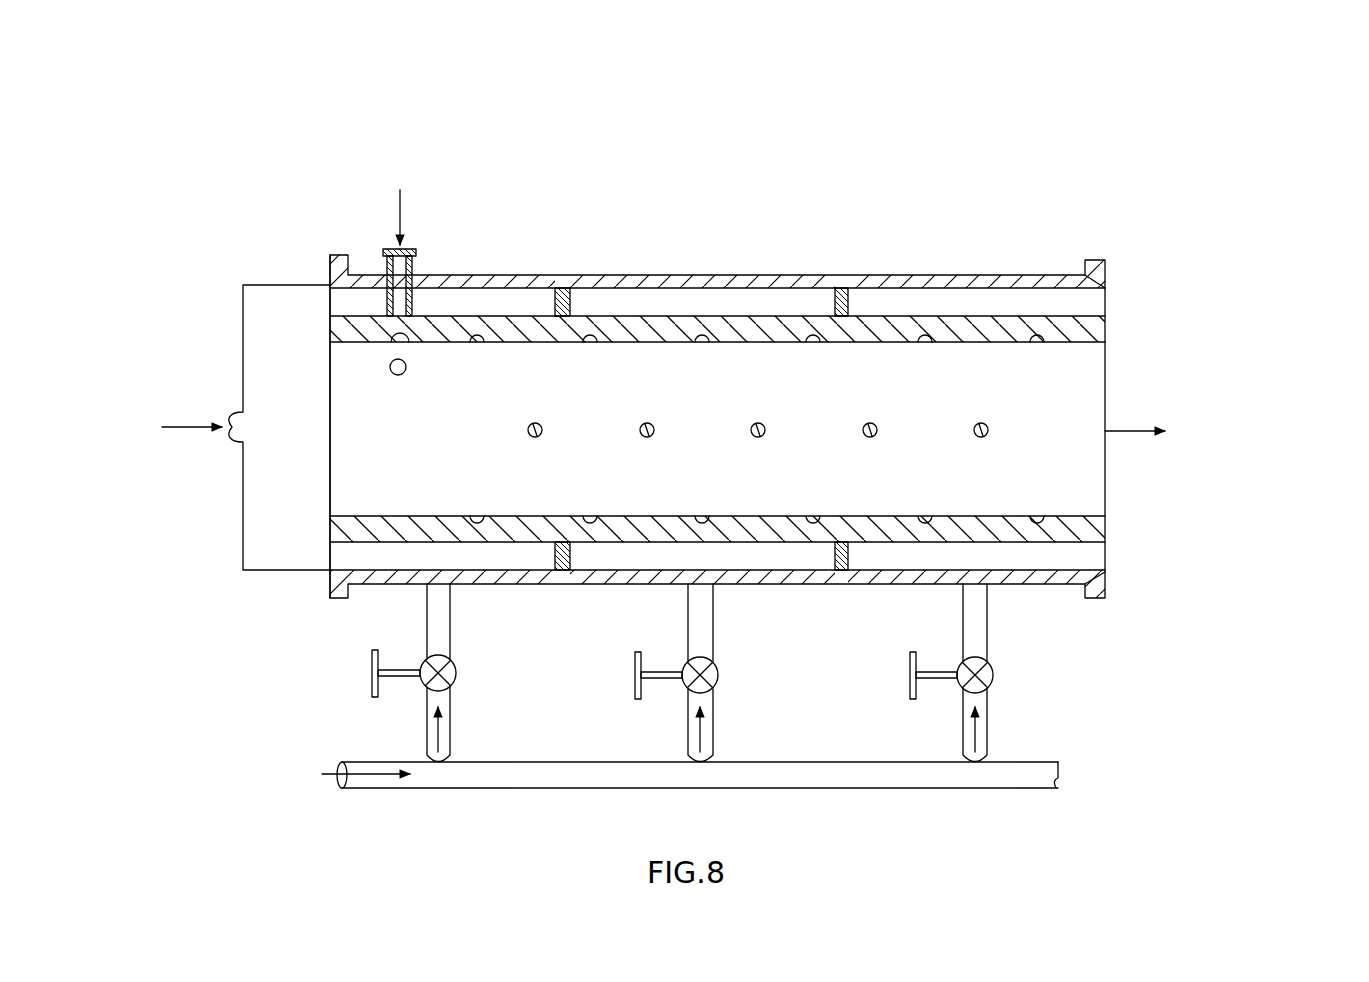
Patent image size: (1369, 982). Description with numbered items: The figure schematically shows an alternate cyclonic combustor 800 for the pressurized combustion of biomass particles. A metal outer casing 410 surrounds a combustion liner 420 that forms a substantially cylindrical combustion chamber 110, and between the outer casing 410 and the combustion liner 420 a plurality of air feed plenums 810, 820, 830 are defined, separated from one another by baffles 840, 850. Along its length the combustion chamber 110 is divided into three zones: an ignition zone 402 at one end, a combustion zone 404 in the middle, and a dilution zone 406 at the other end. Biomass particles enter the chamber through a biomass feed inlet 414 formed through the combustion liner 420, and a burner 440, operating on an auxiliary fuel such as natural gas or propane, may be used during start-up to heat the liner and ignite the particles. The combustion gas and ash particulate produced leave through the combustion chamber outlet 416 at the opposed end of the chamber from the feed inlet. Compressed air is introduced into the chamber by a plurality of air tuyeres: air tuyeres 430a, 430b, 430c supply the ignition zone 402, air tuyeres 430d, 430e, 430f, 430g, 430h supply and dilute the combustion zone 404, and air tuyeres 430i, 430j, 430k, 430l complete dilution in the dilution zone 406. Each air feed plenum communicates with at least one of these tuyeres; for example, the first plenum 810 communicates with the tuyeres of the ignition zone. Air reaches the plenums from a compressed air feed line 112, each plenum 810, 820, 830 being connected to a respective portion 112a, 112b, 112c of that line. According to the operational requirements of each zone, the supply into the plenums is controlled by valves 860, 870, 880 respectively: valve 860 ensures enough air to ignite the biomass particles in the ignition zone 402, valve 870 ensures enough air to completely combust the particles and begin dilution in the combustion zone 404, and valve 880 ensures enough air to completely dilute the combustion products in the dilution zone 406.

The cyclonic combustor 800 is at (491, 110).
The first air feed plenum 810 is at (503, 303).
The second air feed plenum 820 is at (636, 303).
The third air feed plenum 830 is at (888, 300).
The baffle 840 is at (568, 300).
The baffle 850 is at (815, 295).
The outer casing 410 is at (935, 285).
The combustion liner 420 is at (1057, 310).
The dilution zone 406 is at (1003, 387).
The combustion zone 404 is at (673, 387).
The ignition zone 402 is at (385, 470).
The burner 440 is at (262, 285).
The biomass feed inlet 414 is at (415, 272).
The combustion chamber outlet 416 is at (1128, 428).
The air tuyere 430a is at (400, 376).
The air tuyere 430b is at (478, 350).
The air tuyere 430c is at (542, 432).
The air tuyere 430d is at (590, 350).
The air tuyere 430e is at (654, 432).
The air tuyere 430f is at (702, 350).
The air tuyere 430g is at (765, 432).
The air tuyere 430h is at (813, 350).
The air tuyere 430i is at (877, 432).
The air tuyere 430j is at (925, 350).
The air tuyere 430k is at (988, 432).
The air tuyere 430l is at (1037, 350).
The combustion chamber 110 is at (673, 455).
The compressed air feed line 112 is at (452, 790).
The first portion of compressed air feed line 112a is at (452, 715).
The second portion of compressed air feed line 112b is at (715, 715).
The third portion of compressed air feed line 112c is at (988, 715).
The valve 860 is at (427, 685).
The valve 870 is at (689, 688).
The valve 880 is at (960, 688).